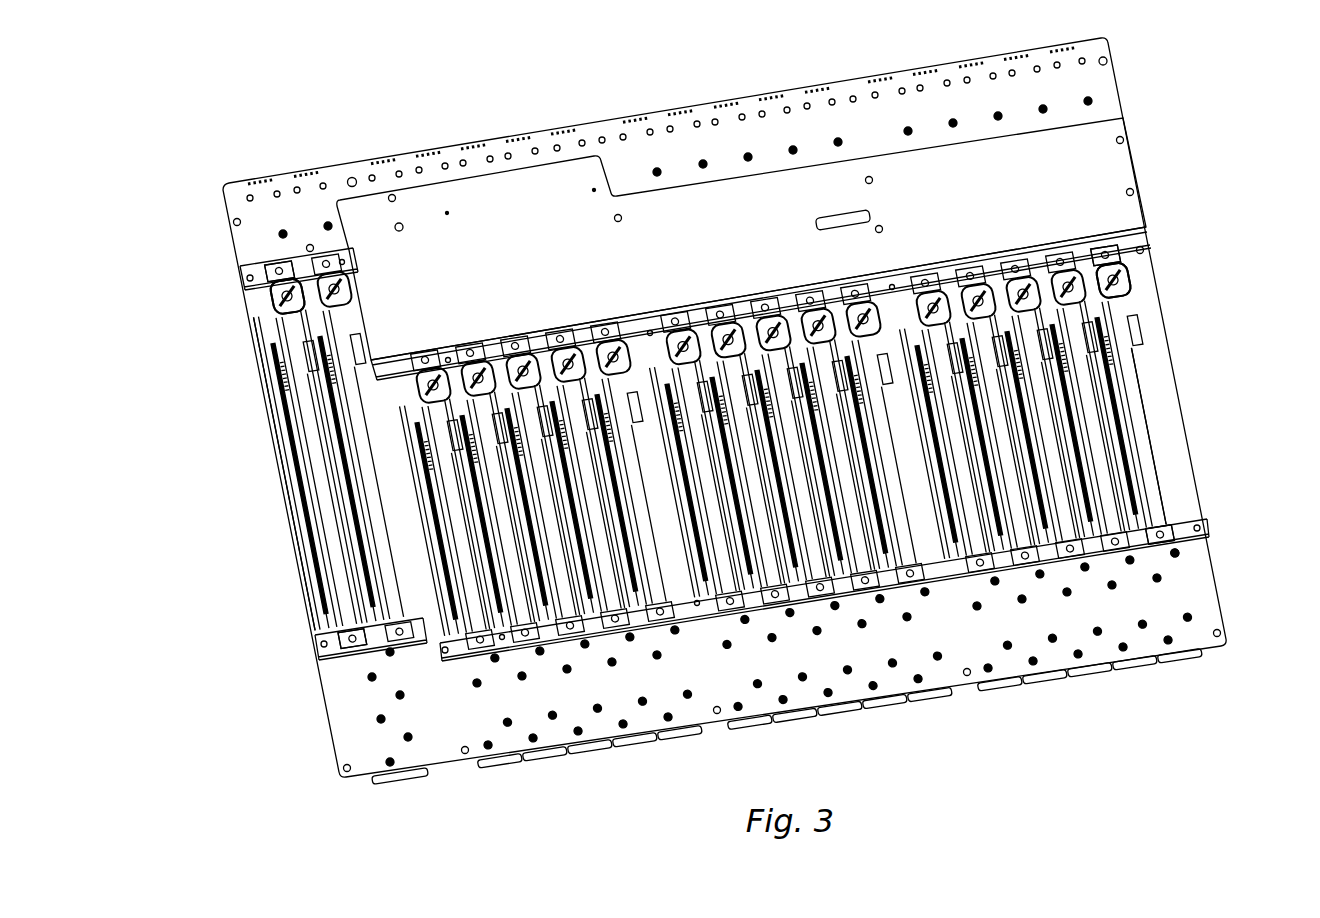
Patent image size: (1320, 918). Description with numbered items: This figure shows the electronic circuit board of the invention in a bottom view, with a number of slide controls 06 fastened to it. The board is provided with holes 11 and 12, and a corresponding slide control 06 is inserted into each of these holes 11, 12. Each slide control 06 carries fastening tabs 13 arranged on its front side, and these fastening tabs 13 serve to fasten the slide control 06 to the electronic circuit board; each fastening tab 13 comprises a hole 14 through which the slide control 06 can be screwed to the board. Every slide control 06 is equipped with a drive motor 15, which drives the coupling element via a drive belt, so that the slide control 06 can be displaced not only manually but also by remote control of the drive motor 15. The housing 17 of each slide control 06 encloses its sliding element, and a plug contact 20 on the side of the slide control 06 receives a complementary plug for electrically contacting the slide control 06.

The slide control 06 is at (313, 551).
The hole 11 is at (431, 533).
The hole 12 is at (299, 476).
The fastening tab 13 is at (278, 270).
The hole 14 is at (277, 278).
The drive motor 15 is at (273, 303).
The housing 17 is at (308, 432).
The plug contact 20 is at (365, 338).